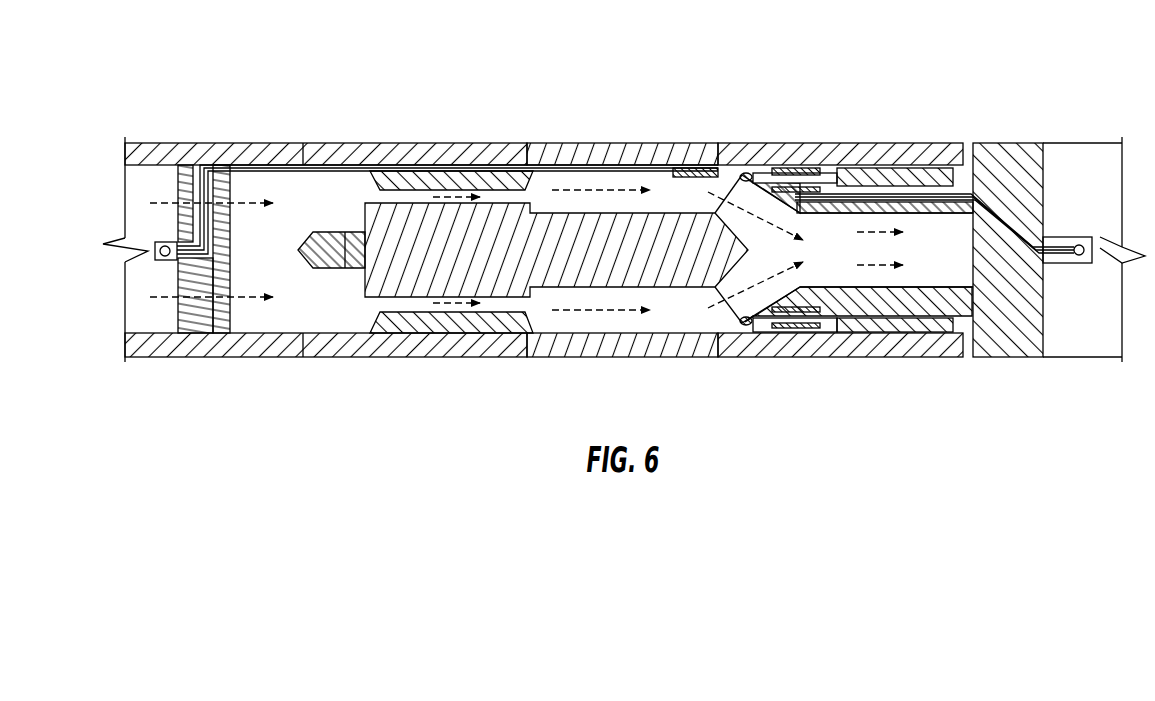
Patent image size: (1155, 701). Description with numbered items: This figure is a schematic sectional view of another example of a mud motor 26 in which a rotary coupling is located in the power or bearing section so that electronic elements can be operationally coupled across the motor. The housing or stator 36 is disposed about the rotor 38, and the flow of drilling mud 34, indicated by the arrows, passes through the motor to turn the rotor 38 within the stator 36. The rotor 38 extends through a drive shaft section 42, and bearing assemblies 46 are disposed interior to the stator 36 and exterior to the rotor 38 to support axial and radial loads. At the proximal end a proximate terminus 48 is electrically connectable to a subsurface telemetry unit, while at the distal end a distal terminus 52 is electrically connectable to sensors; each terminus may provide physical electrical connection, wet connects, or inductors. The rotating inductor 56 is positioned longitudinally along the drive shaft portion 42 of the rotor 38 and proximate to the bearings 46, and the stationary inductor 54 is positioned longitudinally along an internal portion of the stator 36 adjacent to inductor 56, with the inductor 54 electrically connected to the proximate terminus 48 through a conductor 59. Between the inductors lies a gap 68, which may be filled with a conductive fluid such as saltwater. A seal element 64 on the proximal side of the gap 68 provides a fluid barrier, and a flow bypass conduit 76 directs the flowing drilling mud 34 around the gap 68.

The mud motor 26 is at (796, 44).
The drilling mud 34 is at (718, 292).
The stator 36 is at (348, 153).
The rotor 38 is at (377, 276).
The drive shaft section 42 is at (872, 318).
The bearing assemblies 46 is at (905, 167).
The proximate terminus 48 is at (158, 250).
The distal terminus 52 is at (1081, 243).
The inductor 54 is at (800, 170).
The rotating inductor 56 is at (806, 329).
The conductor 59 is at (428, 153).
The seal element 64 is at (748, 174).
The gap 68 is at (766, 313).
The flow bypass conduit 76 is at (728, 192).